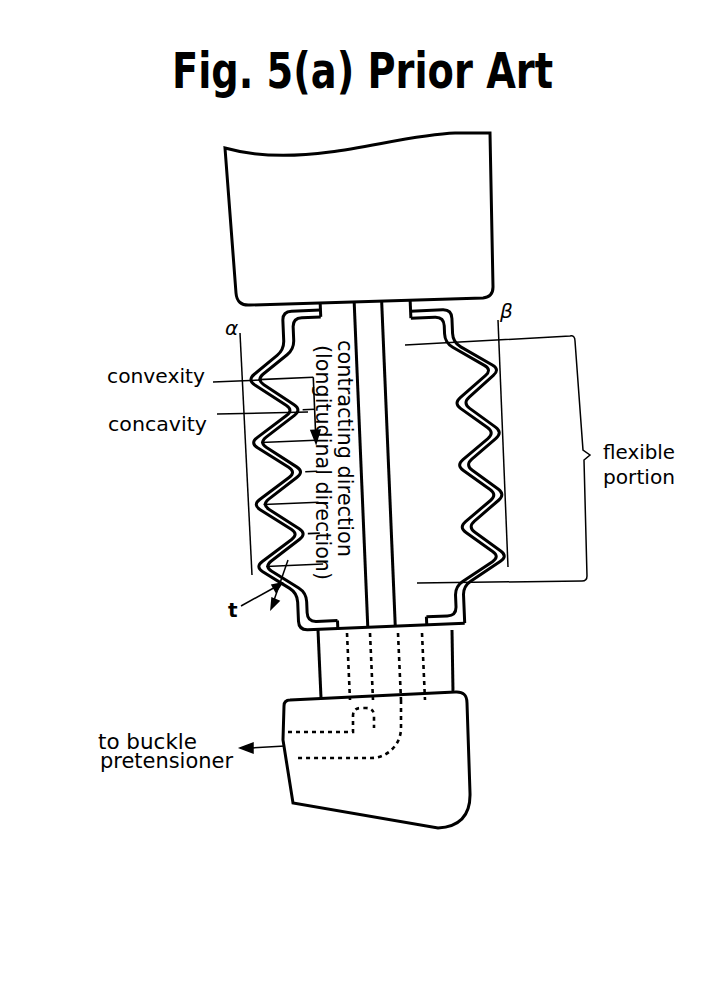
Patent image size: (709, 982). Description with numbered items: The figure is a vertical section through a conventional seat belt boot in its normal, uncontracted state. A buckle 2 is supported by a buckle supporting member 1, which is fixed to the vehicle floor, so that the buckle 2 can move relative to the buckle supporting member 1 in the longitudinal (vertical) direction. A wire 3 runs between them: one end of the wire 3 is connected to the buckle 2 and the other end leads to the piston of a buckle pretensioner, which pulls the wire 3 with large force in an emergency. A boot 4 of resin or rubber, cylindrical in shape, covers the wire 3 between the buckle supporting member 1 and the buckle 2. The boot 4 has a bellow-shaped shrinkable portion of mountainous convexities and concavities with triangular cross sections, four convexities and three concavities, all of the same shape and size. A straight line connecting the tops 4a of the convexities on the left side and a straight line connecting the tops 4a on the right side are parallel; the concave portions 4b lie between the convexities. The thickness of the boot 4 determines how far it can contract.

The buckle supporting member 1 is at (462, 720).
The buckle 2 is at (473, 232).
The wire 3 is at (378, 455).
The boot 4 is at (258, 529).
The tops of the convexities 4a is at (418, 368).
The concave portion of flexible portion 4b is at (410, 401).